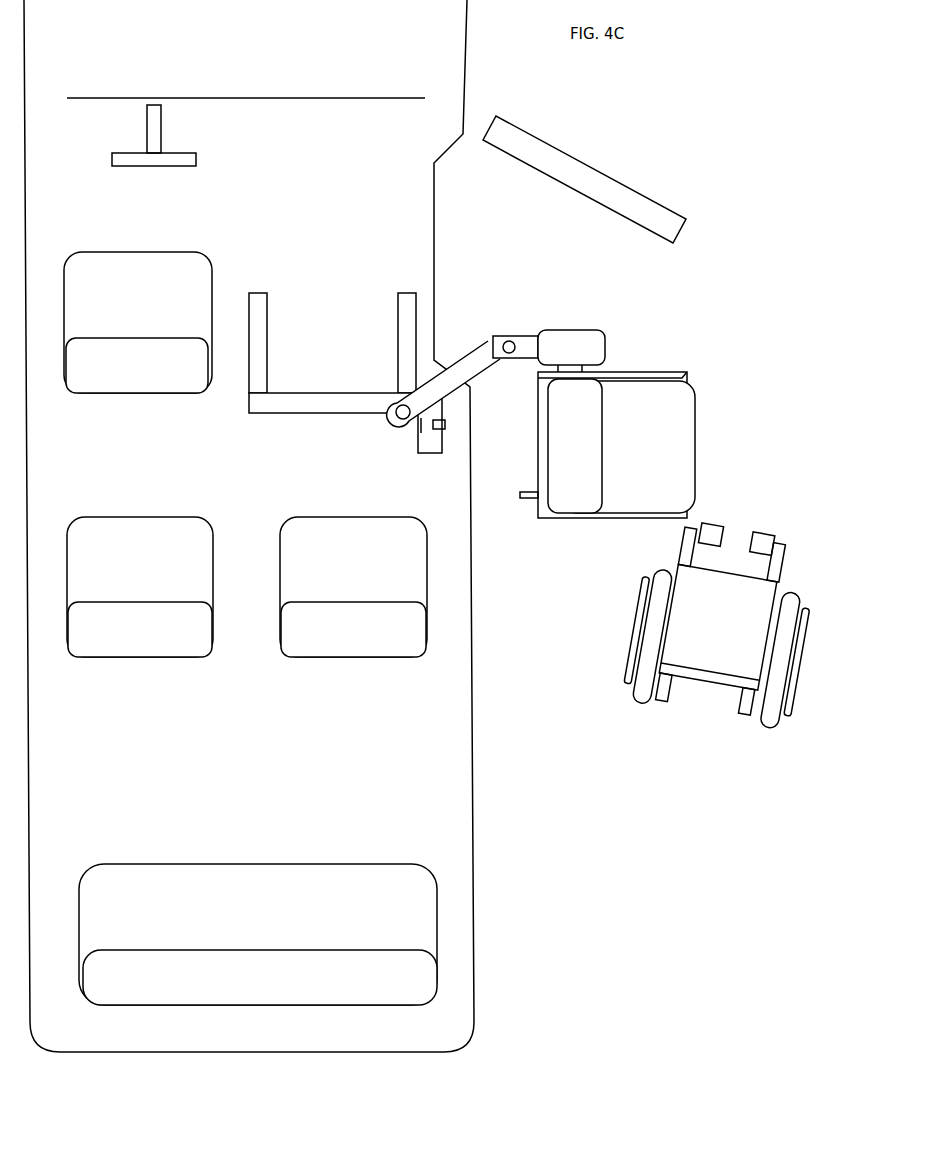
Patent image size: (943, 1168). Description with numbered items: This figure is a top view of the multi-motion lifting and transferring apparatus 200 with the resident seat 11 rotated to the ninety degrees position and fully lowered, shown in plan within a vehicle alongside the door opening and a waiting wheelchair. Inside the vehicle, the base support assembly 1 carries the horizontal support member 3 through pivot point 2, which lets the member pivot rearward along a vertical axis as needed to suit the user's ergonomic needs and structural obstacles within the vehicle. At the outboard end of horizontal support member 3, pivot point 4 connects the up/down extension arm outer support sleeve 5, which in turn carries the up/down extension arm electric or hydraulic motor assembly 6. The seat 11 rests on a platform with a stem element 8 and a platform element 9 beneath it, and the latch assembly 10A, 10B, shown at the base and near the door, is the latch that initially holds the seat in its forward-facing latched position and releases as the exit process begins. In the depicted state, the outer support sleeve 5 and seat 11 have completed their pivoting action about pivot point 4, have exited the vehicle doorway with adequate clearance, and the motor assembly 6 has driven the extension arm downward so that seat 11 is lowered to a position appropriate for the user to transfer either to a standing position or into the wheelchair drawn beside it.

The base support assembly 1 is at (425, 440).
The pivot point 2 is at (400, 410).
The horizontal support member 3 is at (427, 394).
The pivot point 4 is at (506, 340).
The up/down extension arm outer support sleeve 5 is at (527, 343).
The up/down extension arm electric or hydraulic motor assembly 6 is at (577, 338).
The seat support stem 8 is at (570, 368).
The seat platform 9 is at (687, 373).
The latch assembly 10A is at (523, 499).
The latch assembly 10B is at (445, 425).
The seat 11 is at (670, 450).
The multi-motion lifting and transferring apparatus 200 is at (724, 168).